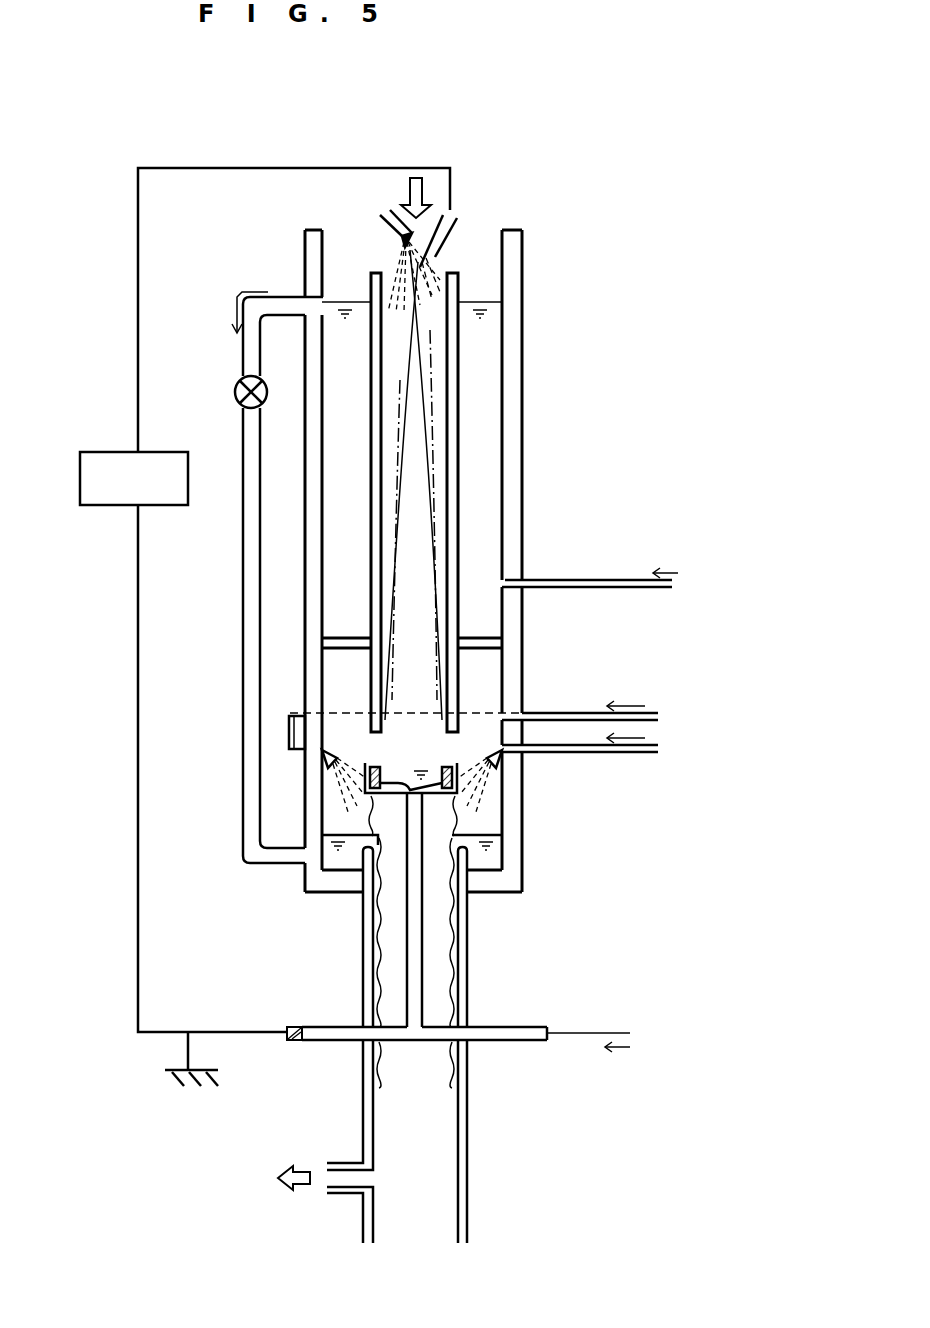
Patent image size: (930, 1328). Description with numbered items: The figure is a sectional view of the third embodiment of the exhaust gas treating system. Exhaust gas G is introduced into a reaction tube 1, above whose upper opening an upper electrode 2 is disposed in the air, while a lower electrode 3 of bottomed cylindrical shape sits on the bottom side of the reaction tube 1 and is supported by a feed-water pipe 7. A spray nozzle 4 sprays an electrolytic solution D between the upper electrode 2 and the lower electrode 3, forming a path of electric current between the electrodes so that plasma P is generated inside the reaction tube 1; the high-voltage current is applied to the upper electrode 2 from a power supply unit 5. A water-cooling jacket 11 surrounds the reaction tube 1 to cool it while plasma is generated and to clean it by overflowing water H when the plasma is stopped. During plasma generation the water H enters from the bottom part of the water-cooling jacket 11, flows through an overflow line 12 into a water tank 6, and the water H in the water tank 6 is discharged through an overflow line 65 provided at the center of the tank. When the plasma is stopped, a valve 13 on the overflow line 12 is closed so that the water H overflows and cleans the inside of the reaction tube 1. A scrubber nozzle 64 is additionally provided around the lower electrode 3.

The reaction tube 1 is at (455, 355).
The upper electrode 2 is at (445, 243).
The lower electrode 3 is at (460, 775).
The spray nozzle 4 is at (395, 250).
The power supply unit 5 is at (93, 462).
The water tank 6 is at (495, 860).
The feed-water pipe 7 is at (423, 955).
The water-cooling jacket 11 is at (490, 425).
The overflow line 12 is at (250, 557).
The valve 13 is at (237, 390).
The scrubber nozzle 64 is at (326, 750).
The overflow line 65 is at (463, 938).
The exhaust gas G is at (423, 190).
The electrolytic solution D is at (440, 270).
The plasma P is at (440, 462).
The water H is at (483, 523).